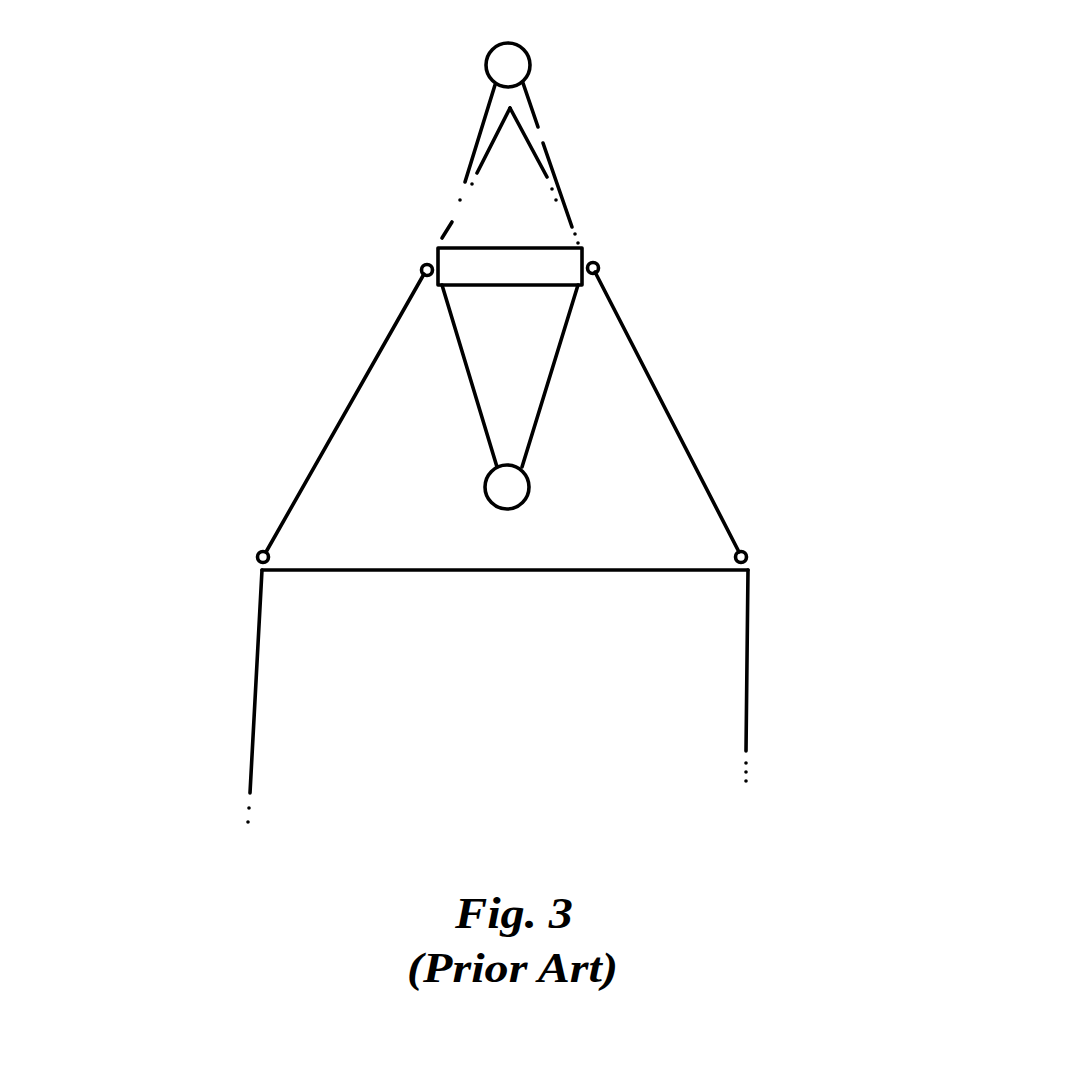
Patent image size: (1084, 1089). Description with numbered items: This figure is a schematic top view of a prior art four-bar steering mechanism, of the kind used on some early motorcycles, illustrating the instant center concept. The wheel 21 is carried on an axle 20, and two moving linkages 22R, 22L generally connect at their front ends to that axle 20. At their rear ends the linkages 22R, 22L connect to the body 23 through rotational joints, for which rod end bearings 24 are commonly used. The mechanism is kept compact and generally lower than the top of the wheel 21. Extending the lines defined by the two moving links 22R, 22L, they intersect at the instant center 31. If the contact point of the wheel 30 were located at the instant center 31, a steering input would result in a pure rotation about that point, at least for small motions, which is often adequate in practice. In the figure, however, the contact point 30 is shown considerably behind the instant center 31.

The wheel 21 is at (486, 63).
The instant center 31 is at (512, 110).
The contact point of the wheel 30 is at (505, 273).
The axle 20 is at (548, 287).
The left linkage 22L is at (360, 387).
The right linkage 22R is at (670, 418).
The rod end bearings 24 is at (257, 558).
The body 23 is at (513, 697).